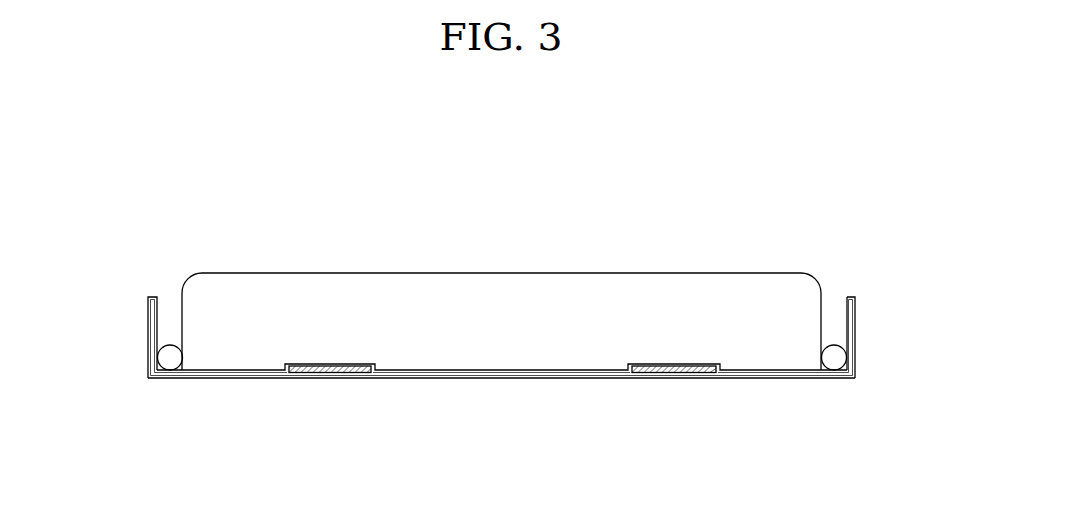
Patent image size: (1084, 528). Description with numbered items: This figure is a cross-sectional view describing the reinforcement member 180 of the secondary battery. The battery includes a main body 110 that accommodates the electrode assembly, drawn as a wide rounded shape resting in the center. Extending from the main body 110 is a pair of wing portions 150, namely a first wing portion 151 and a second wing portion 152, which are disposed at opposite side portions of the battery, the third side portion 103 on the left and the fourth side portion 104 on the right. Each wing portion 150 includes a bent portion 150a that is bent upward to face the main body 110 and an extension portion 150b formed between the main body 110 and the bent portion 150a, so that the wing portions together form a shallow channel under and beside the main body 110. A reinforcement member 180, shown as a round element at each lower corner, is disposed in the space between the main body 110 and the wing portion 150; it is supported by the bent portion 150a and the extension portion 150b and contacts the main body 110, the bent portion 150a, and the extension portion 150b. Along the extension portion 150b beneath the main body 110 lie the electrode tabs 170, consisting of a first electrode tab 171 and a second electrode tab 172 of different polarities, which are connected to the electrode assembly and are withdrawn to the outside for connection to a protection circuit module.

The third side portion 103 is at (132, 317).
The fourth side portion 104 is at (872, 316).
The main body 110 is at (502, 278).
The wing portion 150 is at (547, 298).
The first wing portion 151 is at (163, 253).
The second wing portion 152 is at (885, 258).
The bent portion 150a is at (855, 338).
The extension portion 150b is at (835, 378).
The electrode tab 170 is at (502, 424).
The first electrode tab 171 is at (327, 368).
The second electrode tab 172 is at (676, 370).
The reinforcement member 180 is at (165, 359).